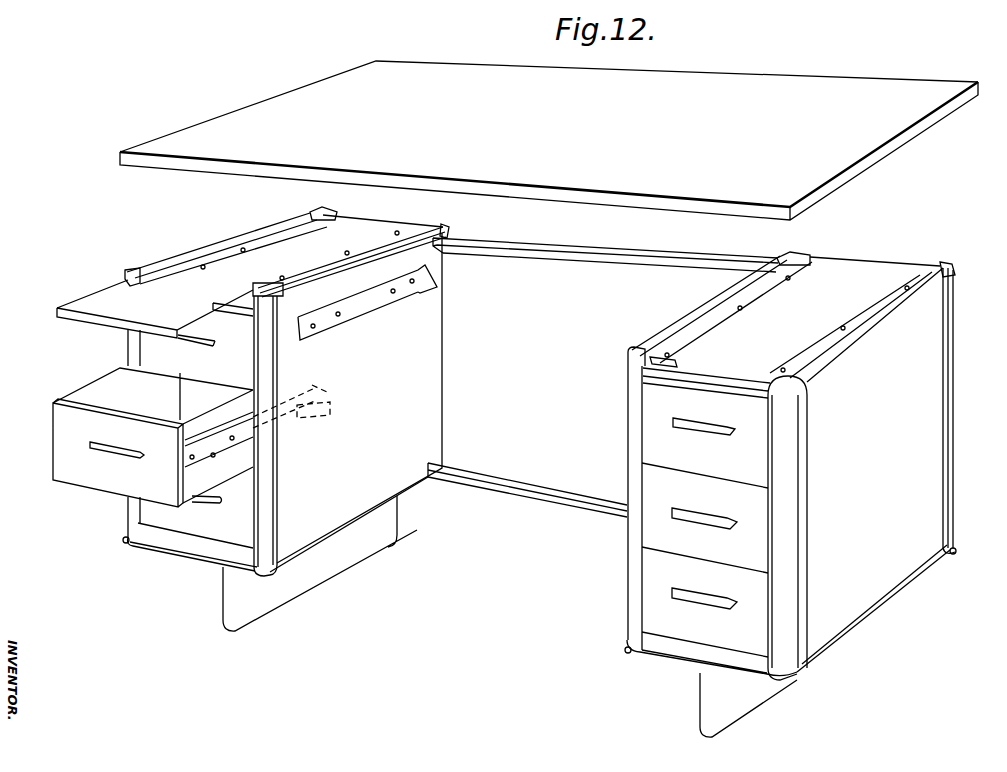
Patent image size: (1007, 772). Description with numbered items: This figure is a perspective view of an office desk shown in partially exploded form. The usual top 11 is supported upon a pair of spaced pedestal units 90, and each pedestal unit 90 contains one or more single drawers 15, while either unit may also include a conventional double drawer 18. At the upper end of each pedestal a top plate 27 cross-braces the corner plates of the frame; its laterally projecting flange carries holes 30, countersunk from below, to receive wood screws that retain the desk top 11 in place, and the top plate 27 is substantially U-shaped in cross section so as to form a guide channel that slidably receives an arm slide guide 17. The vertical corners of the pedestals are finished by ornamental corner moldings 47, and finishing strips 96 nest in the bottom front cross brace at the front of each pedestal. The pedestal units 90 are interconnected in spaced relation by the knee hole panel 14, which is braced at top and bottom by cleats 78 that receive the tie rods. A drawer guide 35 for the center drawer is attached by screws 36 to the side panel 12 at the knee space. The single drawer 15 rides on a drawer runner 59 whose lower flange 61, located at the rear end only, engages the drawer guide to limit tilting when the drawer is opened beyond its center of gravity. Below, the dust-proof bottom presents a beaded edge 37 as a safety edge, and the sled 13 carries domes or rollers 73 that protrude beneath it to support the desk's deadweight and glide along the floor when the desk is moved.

The top 11 is at (908, 86).
The side panel 12 is at (315, 536).
The sled 13 is at (343, 562).
The knee hole panel 14 is at (560, 495).
The single drawer 15 is at (40, 445).
The arm slide guide 17 is at (92, 305).
The double drawer 18 is at (690, 682).
The top plate 27 is at (210, 257).
The holes 30 is at (243, 252).
The drawer guide 35 is at (368, 314).
The screws 36 is at (390, 287).
The beaded edge 37 is at (124, 539).
The corner molding 47 is at (322, 212).
The drawer runner 59 is at (240, 440).
The lower flange 61 is at (318, 414).
The domes or rollers 73 is at (269, 617).
The cleat 78 is at (578, 257).
The pedestal unit 90 is at (118, 352).
The finishing strip 96 is at (196, 543).